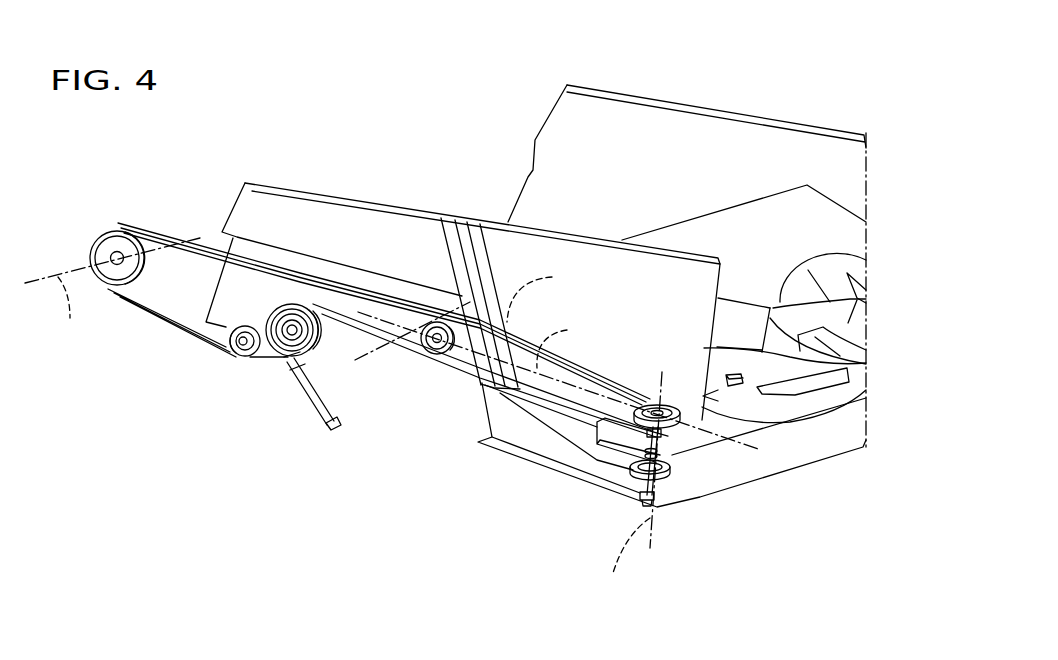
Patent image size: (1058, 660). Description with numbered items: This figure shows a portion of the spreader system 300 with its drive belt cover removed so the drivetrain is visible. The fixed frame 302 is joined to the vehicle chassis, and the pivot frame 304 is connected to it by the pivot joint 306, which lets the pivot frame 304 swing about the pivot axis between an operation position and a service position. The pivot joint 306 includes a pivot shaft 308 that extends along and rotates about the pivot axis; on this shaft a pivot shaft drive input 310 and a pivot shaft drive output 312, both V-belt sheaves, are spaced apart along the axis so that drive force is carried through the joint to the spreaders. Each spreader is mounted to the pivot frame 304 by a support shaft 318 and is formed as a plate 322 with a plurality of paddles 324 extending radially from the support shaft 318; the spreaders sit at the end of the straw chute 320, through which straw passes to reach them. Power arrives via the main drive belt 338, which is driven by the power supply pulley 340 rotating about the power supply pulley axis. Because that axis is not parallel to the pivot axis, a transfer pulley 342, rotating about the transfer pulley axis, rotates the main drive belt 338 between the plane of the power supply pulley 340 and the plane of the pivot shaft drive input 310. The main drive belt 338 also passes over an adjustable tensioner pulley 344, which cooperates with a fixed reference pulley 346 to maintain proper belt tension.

The belt drive assembly 300 is at (745, 90).
The fixed frame 302 is at (370, 230).
The pivot frame 304 is at (822, 440).
The pivot joint 306 is at (613, 463).
The pivot shaft 308 is at (643, 503).
The pivot shaft drive input 310 is at (677, 423).
The pivot shaft drive output 312 is at (666, 468).
The support shaft 318 is at (725, 379).
The straw chute 320 is at (780, 223).
The plate 322 is at (858, 306).
The paddles 324 is at (835, 381).
The main drive belt 338 is at (170, 325).
The power supply pulley 340 is at (116, 243).
The transfer pulley 342 is at (463, 367).
The tensioner pulley 344 is at (280, 360).
The fixed reference pulley 346 is at (235, 355).